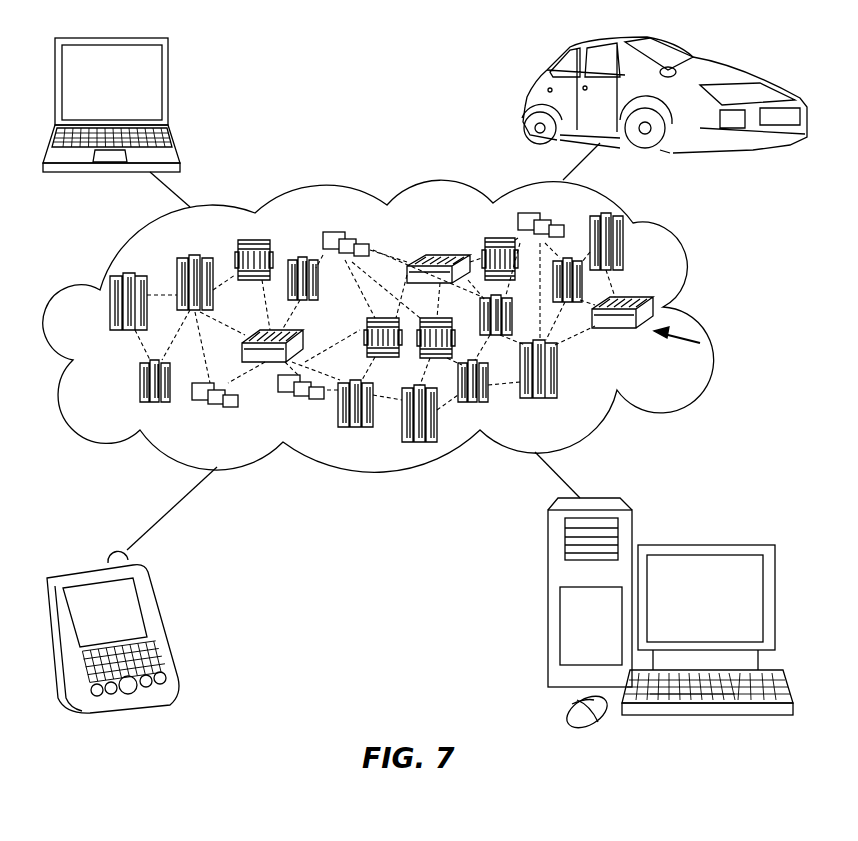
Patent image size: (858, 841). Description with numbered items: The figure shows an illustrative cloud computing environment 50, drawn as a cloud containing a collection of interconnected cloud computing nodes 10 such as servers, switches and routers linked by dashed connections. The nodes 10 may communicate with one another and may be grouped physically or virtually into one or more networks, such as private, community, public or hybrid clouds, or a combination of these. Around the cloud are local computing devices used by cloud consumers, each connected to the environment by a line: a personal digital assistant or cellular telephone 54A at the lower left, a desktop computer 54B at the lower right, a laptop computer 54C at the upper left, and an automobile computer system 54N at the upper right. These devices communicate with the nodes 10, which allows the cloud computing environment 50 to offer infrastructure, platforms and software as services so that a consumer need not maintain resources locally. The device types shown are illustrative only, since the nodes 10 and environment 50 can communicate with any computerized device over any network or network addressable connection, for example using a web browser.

The cloud computing environment 50 is at (705, 310).
The cloud computing node 10 is at (700, 343).
The personal digital assistant or cellular telephone 54A is at (158, 619).
The desktop computer 54B is at (702, 546).
The laptop computer 54C is at (168, 83).
The automobile computer system 54N is at (525, 105).